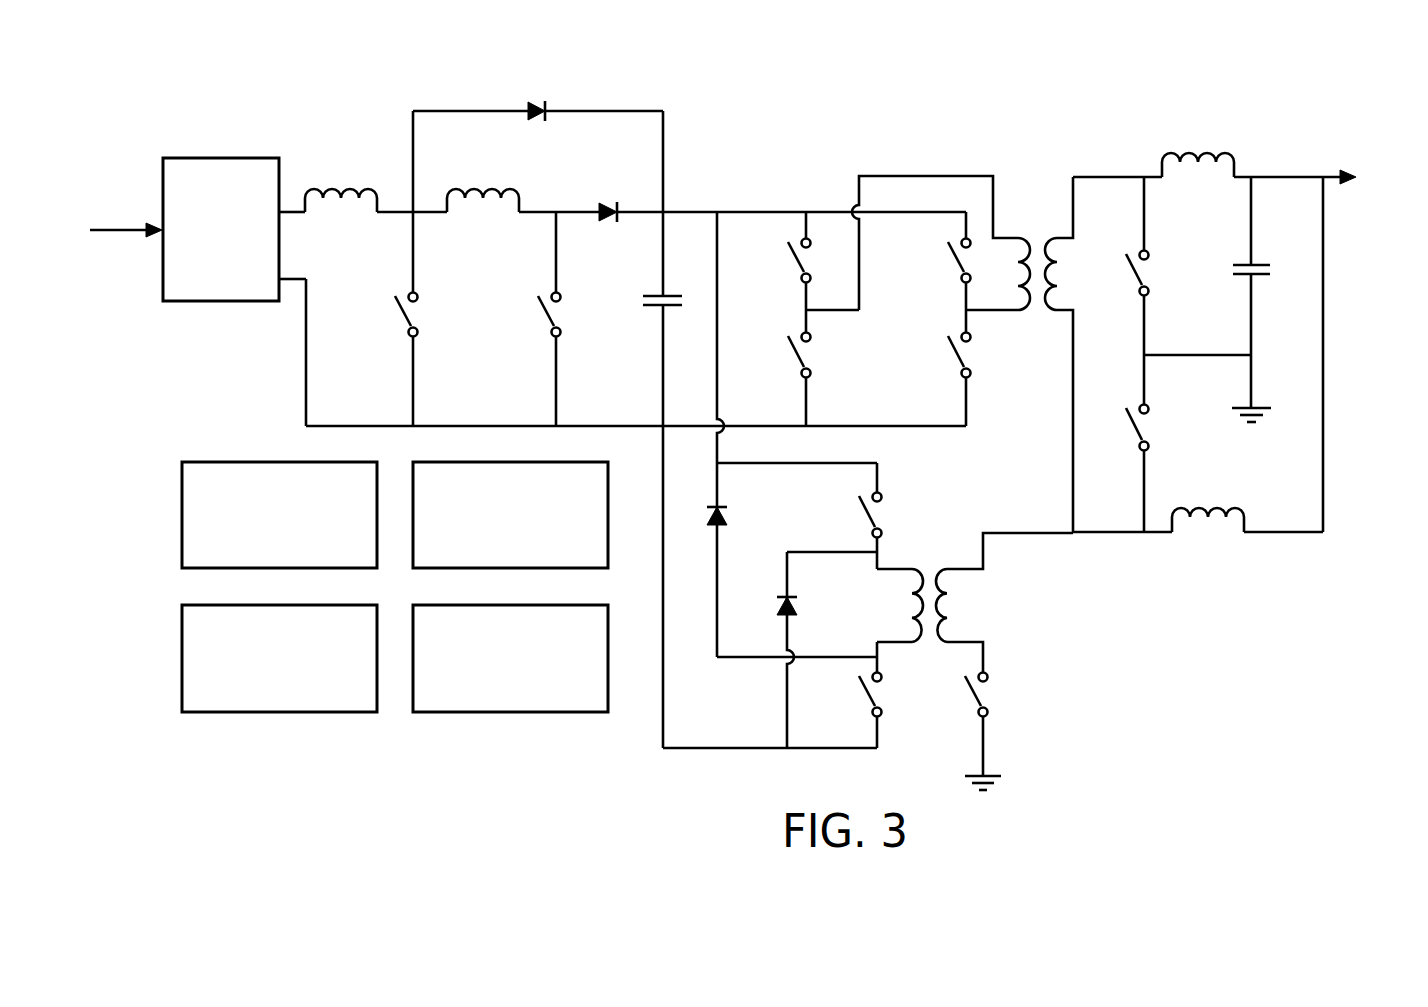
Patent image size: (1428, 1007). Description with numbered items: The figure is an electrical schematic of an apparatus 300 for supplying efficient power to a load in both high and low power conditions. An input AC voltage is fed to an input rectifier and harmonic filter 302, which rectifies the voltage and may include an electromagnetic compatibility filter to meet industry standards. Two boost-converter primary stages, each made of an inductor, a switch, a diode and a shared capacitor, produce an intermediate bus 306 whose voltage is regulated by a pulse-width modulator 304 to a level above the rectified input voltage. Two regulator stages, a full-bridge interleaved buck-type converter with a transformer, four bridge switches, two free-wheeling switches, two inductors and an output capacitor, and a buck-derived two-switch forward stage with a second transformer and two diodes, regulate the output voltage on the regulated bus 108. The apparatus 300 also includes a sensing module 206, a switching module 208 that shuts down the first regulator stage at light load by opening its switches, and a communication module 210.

The apparatus 300 is at (178, 104).
The input rectifier and harmonic filter 302 is at (201, 283).
The intermediate bus 306 is at (762, 200).
The regulated bus 108 is at (1361, 148).
The sensing module 206 is at (259, 543).
The pulse-width modulator 304 is at (491, 557).
The switching module 208 is at (259, 700).
The communication module 210 is at (491, 700).